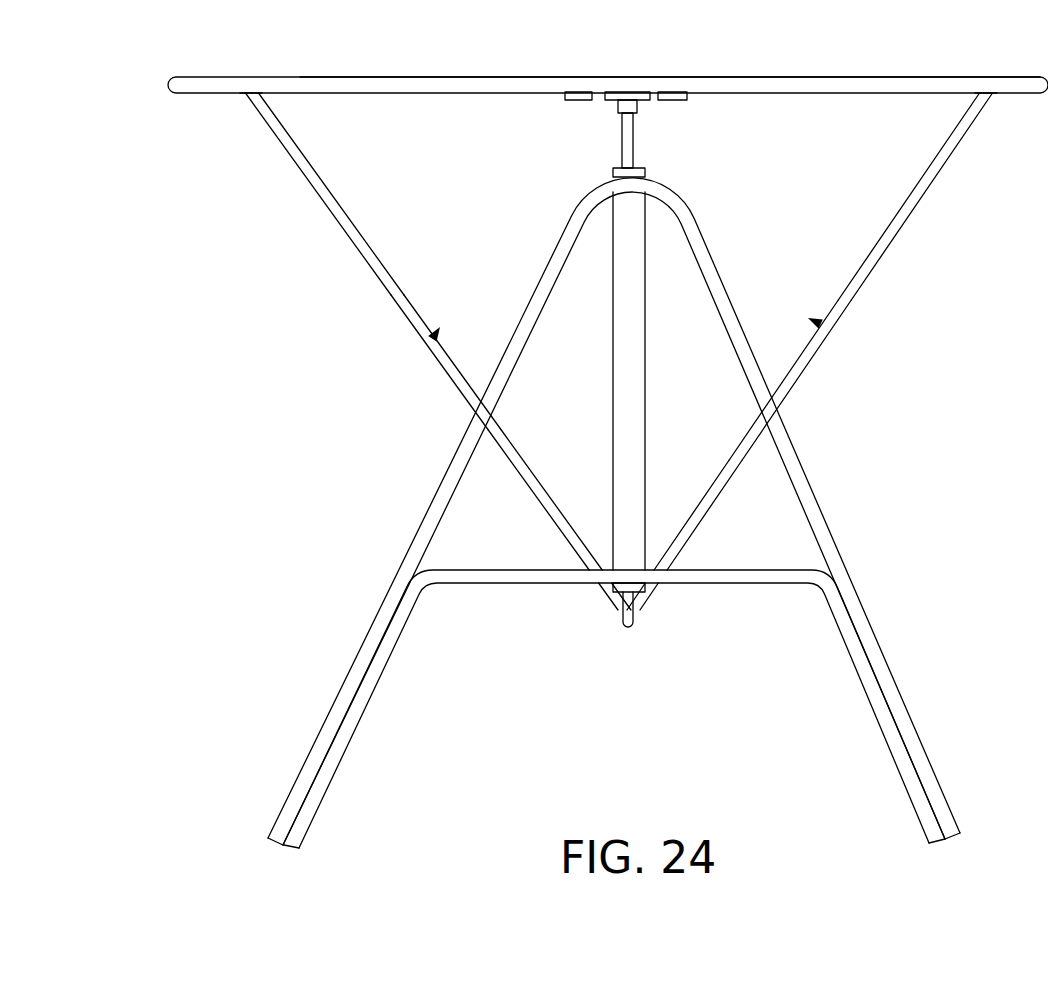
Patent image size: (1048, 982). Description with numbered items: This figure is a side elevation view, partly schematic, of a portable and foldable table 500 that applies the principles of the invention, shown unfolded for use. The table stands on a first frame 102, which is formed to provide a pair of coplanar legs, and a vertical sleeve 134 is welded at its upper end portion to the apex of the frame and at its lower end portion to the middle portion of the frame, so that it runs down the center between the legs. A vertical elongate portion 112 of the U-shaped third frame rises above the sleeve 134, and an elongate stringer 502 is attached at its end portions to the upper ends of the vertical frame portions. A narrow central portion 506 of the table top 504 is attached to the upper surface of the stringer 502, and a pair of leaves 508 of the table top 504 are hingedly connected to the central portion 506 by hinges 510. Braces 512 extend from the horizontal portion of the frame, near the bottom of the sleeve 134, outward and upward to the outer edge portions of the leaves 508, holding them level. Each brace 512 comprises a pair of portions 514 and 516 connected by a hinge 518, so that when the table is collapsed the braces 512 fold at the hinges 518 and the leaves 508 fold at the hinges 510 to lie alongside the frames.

The first frame 102 is at (708, 262).
The vertical elongate portion 112 is at (637, 148).
The vertical sleeve 134 is at (632, 438).
The table 500 is at (848, 496).
The stringer 502 is at (618, 110).
The table top 504 is at (858, 85).
The central portion 506 is at (625, 90).
The leaf 508 is at (378, 83).
The hinge 510 is at (557, 103).
The brace 512 is at (425, 305).
The brace portion 514 is at (525, 470).
The brace portion 516 is at (383, 247).
The hinge 518 is at (436, 330).